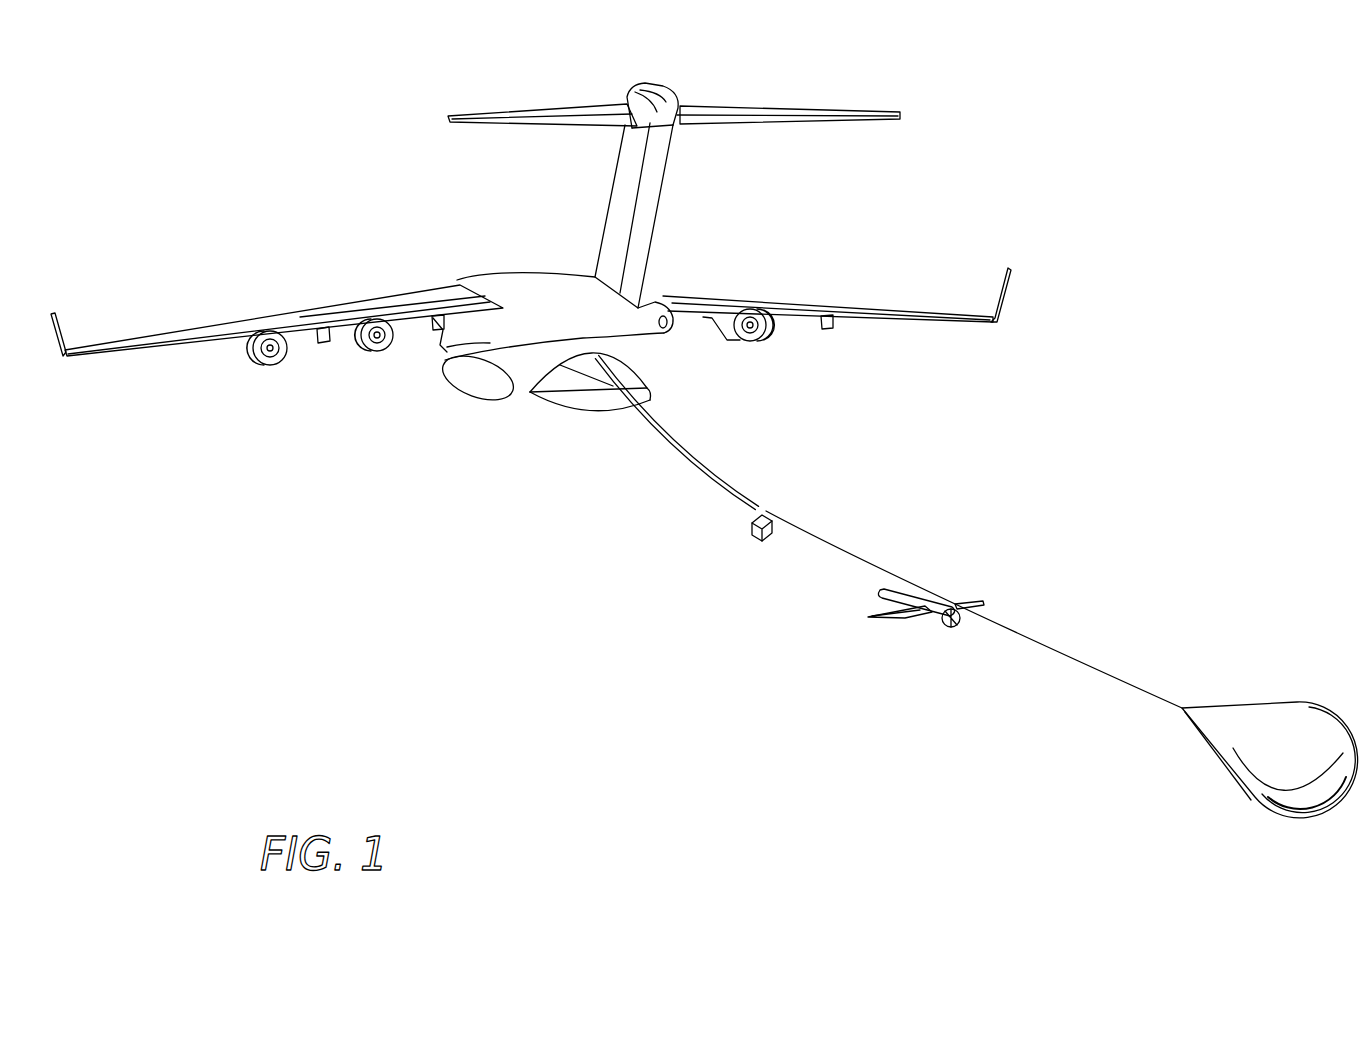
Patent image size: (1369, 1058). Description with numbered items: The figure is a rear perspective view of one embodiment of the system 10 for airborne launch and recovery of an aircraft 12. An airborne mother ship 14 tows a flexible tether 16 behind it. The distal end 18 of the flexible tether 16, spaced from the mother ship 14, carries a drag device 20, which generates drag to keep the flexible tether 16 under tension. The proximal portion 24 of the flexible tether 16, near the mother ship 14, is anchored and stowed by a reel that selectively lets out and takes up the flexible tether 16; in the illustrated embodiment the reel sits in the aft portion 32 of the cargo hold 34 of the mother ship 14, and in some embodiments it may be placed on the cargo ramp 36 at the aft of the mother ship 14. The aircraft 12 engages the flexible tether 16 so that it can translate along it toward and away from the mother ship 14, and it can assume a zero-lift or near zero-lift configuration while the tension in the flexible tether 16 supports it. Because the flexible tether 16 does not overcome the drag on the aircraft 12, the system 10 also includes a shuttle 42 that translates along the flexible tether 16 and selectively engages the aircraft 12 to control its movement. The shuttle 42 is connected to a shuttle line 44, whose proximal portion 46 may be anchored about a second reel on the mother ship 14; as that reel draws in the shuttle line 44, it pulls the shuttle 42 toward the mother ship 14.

The system for airborne launch and recovery 10 is at (400, 562).
The aircraft 12 is at (893, 652).
The mother ship 14 is at (345, 285).
The flexible tether 16 is at (863, 565).
The distal end 18 is at (1182, 706).
The drag device 20 is at (1243, 783).
The proximal portion 24 is at (660, 425).
The aft portion 32 is at (653, 343).
The cargo hold 34 is at (447, 355).
The cargo ramp 36 is at (540, 398).
The shuttle 42 is at (757, 535).
The shuttle line 44 is at (677, 458).
The proximal portion of shuttle line 46 is at (607, 410).